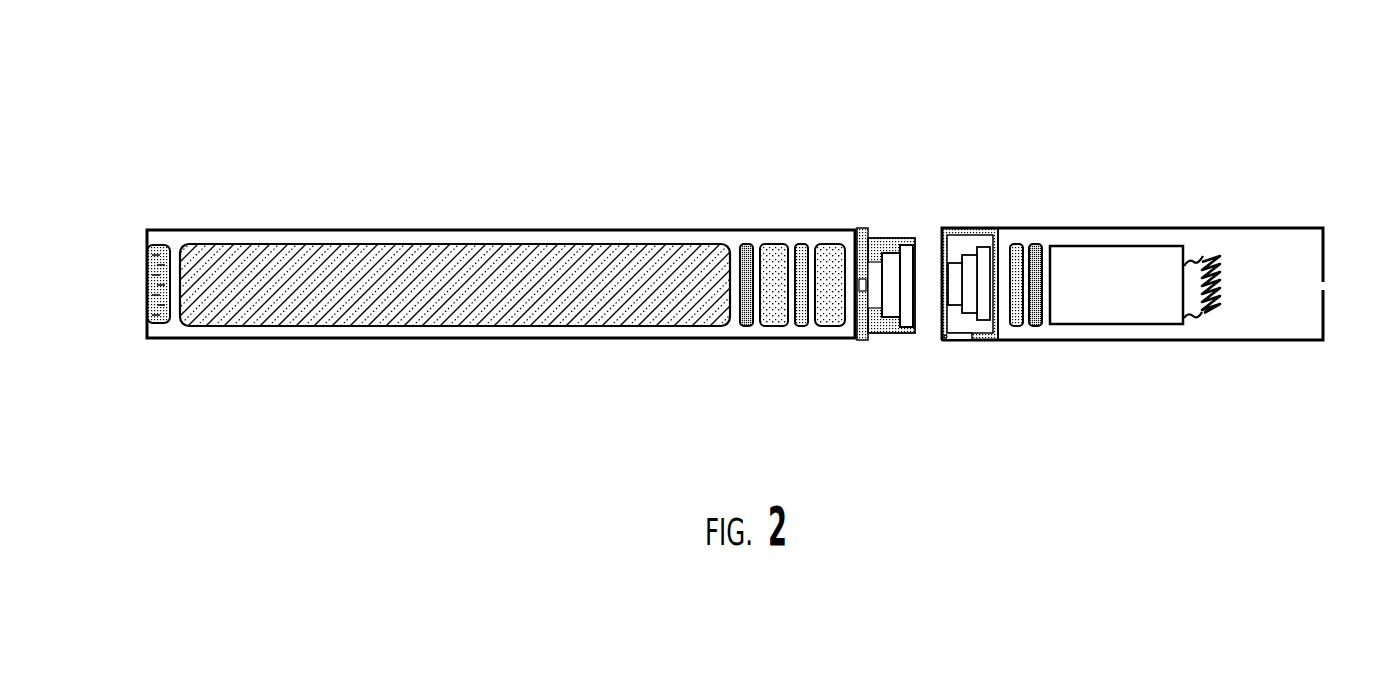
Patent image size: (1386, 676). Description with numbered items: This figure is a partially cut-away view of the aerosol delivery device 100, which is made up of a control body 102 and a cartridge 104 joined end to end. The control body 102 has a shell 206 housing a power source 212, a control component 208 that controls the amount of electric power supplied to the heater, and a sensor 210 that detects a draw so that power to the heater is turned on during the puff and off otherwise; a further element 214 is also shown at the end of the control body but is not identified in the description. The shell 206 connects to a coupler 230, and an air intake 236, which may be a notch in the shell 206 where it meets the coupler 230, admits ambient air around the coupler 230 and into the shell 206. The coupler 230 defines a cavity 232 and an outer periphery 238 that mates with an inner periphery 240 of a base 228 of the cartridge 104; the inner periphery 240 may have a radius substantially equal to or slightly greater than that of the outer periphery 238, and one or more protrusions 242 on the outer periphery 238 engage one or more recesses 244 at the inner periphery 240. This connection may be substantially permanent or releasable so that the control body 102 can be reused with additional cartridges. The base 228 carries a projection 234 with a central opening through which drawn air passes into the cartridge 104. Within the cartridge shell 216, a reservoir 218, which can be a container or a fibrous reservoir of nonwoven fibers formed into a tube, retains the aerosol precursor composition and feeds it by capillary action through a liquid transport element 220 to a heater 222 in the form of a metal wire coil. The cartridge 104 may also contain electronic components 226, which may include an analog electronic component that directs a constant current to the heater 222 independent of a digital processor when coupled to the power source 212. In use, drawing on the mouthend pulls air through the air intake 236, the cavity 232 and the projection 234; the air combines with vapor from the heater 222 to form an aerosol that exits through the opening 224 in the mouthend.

The aerosol delivery device 100 is at (236, 118).
The control body 102 is at (418, 188).
The cartridge 104 is at (1143, 194).
The shell 206 is at (283, 340).
The control component 208 is at (772, 326).
The sensor 210 is at (830, 326).
The power source 212 is at (430, 327).
The end cap 214 is at (153, 323).
The cartridge shell 216 is at (1088, 340).
The reservoir 218 is at (1128, 328).
The liquid transport element 220 is at (1200, 318).
The heater 222 is at (1213, 310).
The opening 224 is at (1322, 283).
The electronic components 226 is at (1017, 327).
The base 228 is at (993, 340).
The coupler 230 is at (893, 334).
The cavity 232 is at (888, 255).
The projection 234 is at (972, 257).
The air intake 236 is at (855, 229).
The outer periphery 238 is at (897, 245).
The inner periphery 240 is at (962, 245).
The protrusions 242 is at (875, 340).
The recesses 244 is at (958, 340).